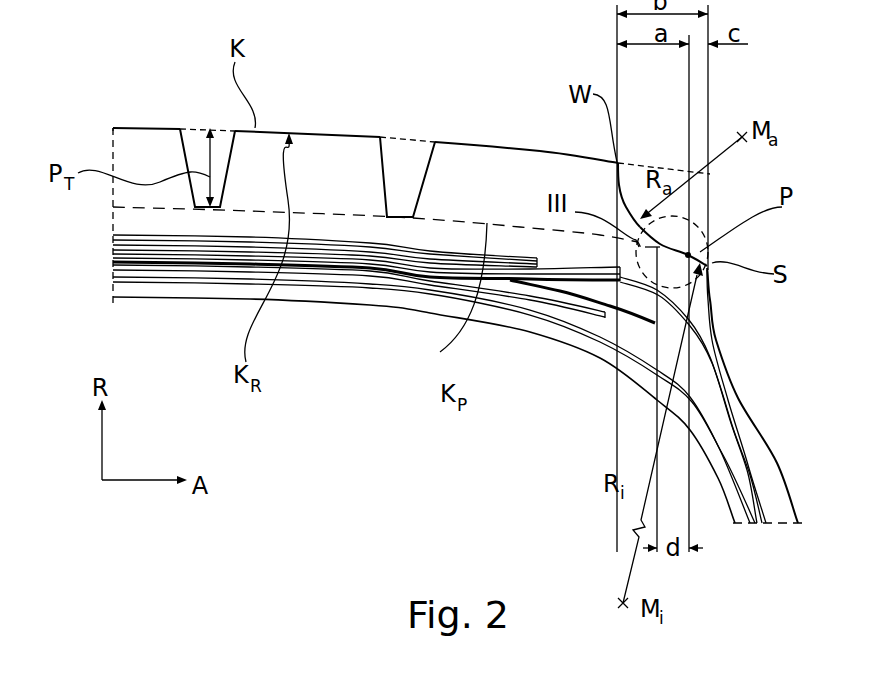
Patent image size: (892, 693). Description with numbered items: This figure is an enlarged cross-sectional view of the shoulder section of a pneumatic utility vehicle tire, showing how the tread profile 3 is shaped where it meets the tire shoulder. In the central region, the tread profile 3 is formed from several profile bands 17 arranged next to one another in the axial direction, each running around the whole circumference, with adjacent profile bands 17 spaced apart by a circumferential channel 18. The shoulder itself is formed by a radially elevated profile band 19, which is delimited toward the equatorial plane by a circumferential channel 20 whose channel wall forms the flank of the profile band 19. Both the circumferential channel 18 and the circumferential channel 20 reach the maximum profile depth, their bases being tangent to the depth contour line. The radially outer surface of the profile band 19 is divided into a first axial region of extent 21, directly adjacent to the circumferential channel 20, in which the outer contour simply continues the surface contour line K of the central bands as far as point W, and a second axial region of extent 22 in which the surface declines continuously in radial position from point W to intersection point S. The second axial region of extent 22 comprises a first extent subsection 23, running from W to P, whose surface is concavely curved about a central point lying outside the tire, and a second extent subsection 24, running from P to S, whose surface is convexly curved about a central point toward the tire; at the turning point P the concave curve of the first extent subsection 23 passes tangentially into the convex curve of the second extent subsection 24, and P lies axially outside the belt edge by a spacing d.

The tread profile 3 is at (158, 119).
The profile band 17 is at (122, 128).
The circumferential channel 18 is at (198, 145).
The profile band 19 is at (458, 143).
The circumferential channel 20 is at (403, 153).
The first axial region of extent 21 is at (515, 145).
The second axial region of extent 22 is at (628, 203).
The first extent subsection 23 is at (621, 190).
The second extent subsection 24 is at (712, 250).